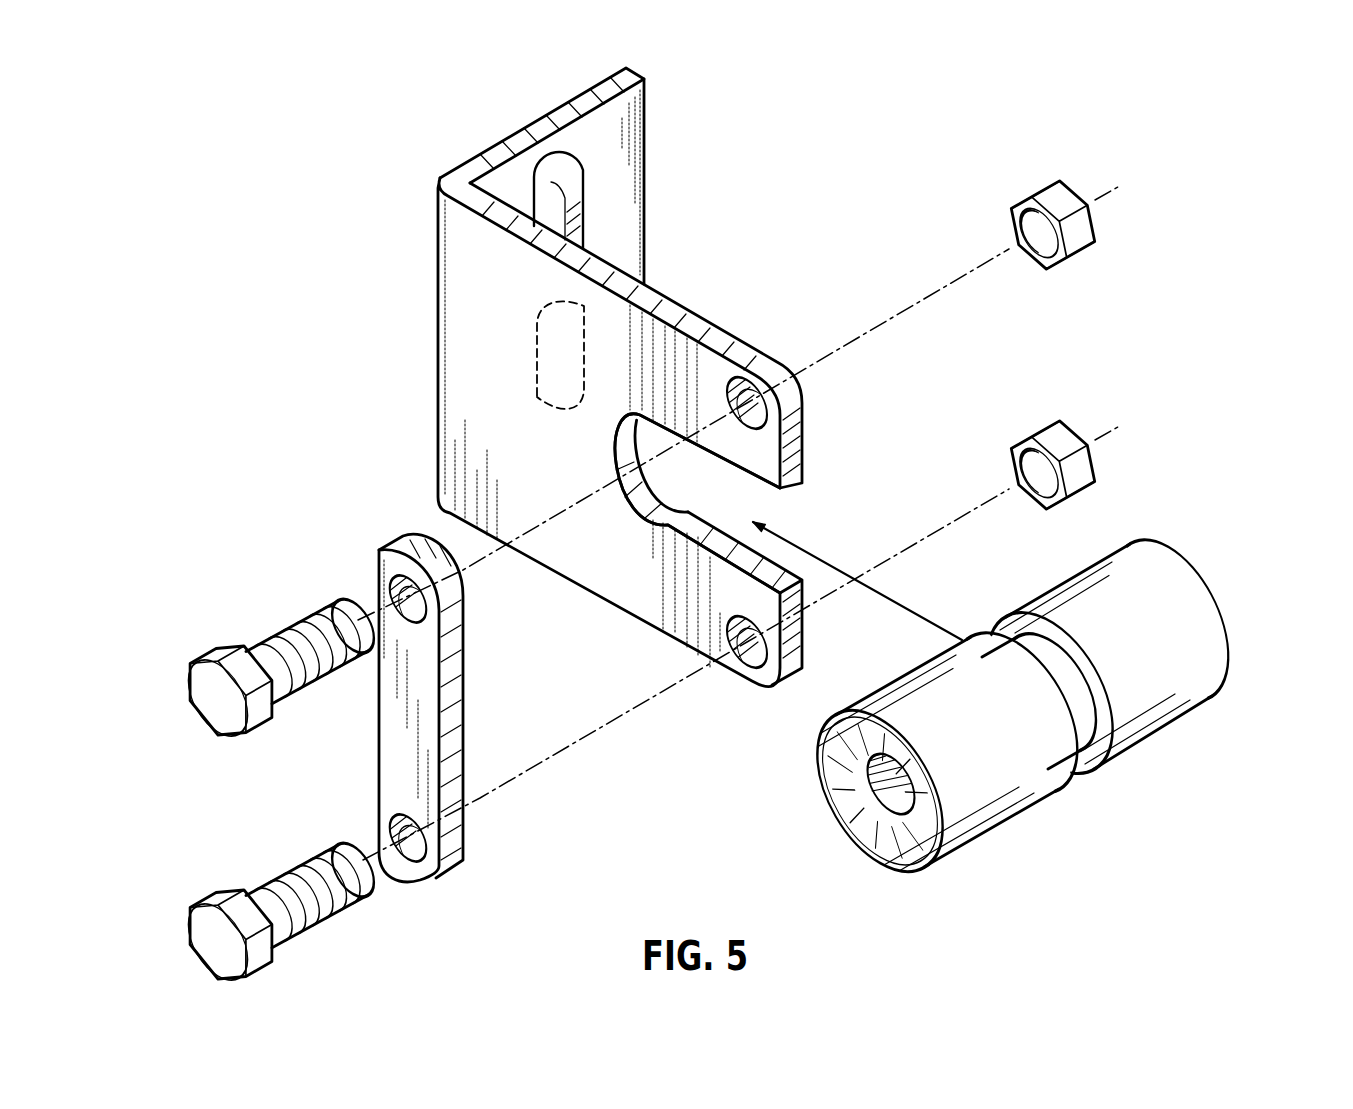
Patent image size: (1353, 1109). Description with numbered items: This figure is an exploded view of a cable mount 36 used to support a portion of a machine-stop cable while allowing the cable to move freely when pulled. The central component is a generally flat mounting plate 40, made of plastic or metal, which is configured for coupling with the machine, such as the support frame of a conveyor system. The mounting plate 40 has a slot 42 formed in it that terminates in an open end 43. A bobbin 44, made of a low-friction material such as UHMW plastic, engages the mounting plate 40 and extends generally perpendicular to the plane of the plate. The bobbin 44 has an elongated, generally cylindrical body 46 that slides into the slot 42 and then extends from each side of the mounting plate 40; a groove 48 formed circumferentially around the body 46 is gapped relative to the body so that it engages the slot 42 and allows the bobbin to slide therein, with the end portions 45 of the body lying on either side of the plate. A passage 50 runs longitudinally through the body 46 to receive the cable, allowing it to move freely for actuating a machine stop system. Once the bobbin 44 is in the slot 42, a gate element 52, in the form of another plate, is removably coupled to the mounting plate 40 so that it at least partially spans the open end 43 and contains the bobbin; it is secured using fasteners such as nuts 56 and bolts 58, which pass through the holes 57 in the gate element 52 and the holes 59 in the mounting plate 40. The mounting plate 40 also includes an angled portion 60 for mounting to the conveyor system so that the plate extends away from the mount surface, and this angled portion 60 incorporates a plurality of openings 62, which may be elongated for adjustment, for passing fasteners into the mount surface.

The cable mount 36 is at (396, 119).
The mounting plate 40 is at (437, 327).
The slot 42 is at (688, 520).
The open end 43 is at (787, 521).
The bobbin 44 is at (1192, 571).
The end portion of spacer 45 is at (866, 851).
The elongated body 46 is at (1152, 738).
The groove 48 is at (1012, 647).
The passage 50 is at (892, 783).
The gate element 52 is at (385, 710).
The nuts 56 is at (197, 942).
The hole in clamp plate 57 is at (392, 580).
The bolts 58 is at (1057, 186).
The hole in second plate 59 is at (736, 402).
The angled portion 60 is at (640, 240).
The openings 62 is at (577, 198).